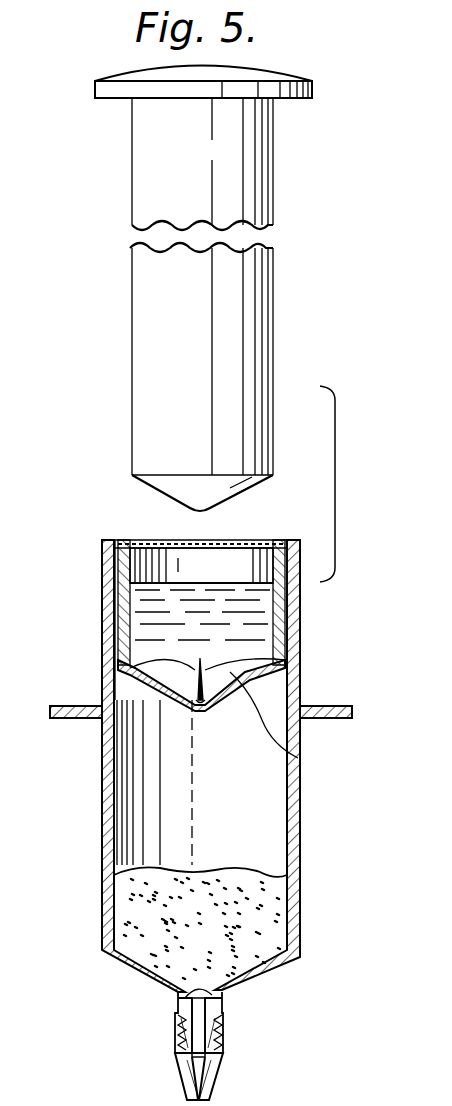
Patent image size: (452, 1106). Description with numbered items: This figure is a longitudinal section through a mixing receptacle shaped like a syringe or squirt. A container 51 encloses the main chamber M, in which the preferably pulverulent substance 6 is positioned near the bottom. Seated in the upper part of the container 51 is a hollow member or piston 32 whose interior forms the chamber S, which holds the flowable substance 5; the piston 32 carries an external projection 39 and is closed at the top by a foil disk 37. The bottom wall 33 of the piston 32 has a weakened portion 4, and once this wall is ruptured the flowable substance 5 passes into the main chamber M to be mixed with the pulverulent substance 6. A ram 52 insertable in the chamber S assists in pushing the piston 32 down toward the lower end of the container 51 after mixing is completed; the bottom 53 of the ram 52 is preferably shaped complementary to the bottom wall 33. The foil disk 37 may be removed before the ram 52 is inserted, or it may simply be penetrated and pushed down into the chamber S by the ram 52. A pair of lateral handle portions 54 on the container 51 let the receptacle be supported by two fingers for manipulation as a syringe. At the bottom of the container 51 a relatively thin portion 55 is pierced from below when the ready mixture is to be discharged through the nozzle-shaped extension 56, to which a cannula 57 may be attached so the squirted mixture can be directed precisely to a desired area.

The ram 52 is at (273, 249).
The bottom of the ram 53 is at (160, 488).
The foil disk 37 is at (250, 540).
The chamber S is at (158, 562).
The hollow member or piston 32 is at (112, 624).
The flowable substance 5 is at (255, 628).
The weakened portion 4 is at (125, 665).
The external projection 39 is at (300, 660).
The lateral handle portions 54 is at (52, 718).
The bottom wall 33 is at (298, 758).
The main chamber m is at (248, 793).
The container 51 is at (104, 834).
The pulverulent substance 6 is at (256, 900).
The relatively thin portion 55 is at (208, 994).
The nozzle-shaped extension 56 is at (178, 1028).
The cannula 57 is at (220, 1076).